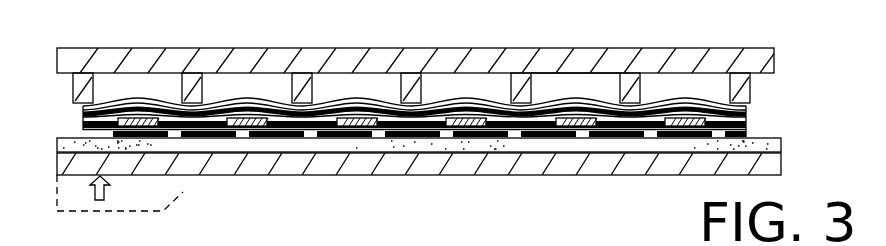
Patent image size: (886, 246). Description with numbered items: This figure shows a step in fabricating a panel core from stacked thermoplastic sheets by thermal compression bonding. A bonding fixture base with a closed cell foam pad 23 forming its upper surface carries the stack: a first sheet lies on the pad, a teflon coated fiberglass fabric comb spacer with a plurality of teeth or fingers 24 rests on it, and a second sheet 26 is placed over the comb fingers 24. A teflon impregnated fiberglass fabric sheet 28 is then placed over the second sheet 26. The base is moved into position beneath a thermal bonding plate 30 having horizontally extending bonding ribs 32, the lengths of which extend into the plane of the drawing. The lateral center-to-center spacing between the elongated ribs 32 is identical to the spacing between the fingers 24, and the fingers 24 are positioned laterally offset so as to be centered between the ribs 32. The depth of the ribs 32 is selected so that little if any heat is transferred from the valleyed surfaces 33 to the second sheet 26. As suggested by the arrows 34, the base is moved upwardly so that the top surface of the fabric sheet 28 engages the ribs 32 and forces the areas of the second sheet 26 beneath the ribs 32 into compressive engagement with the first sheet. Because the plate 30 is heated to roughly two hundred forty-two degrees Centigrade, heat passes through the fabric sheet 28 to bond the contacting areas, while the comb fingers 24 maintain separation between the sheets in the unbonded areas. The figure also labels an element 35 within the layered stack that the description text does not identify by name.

The closed cell foam pad 23 is at (62, 114).
The comb fingers 24 is at (567, 103).
The second sheet 26 is at (743, 118).
The teflon impregnated fiberglass fabric sheet 28 is at (683, 97).
The thermal bonding plate 30 is at (150, 61).
The bonding ribs 32 is at (418, 98).
The valleyed surfaces 33 is at (603, 79).
The arrows 34 is at (103, 190).
The adhesive band 35 is at (618, 125).